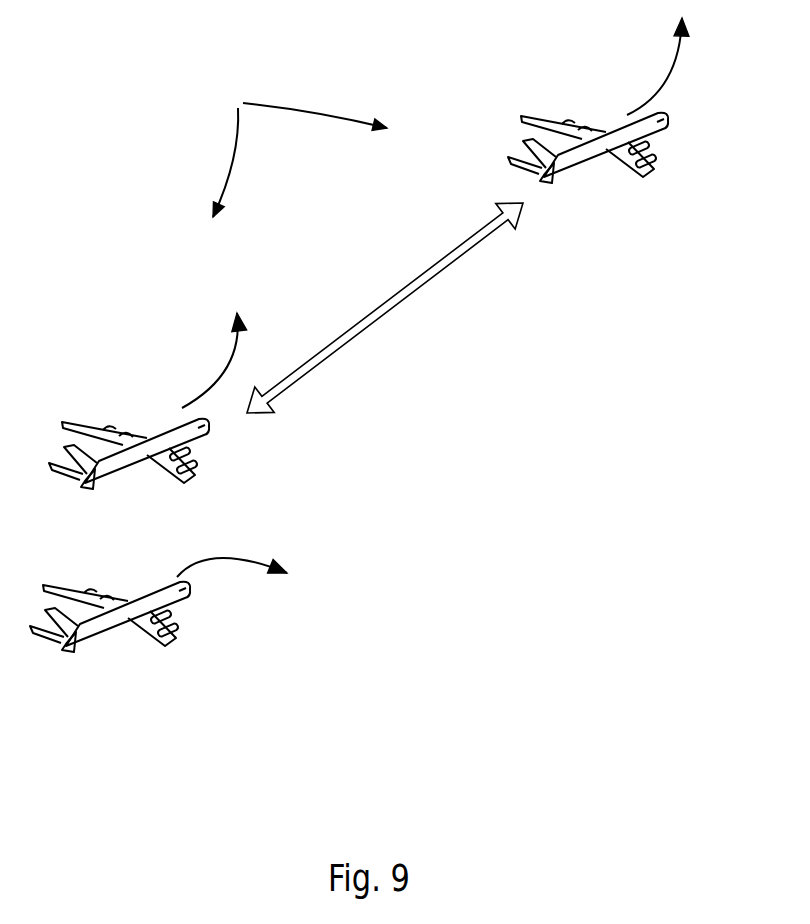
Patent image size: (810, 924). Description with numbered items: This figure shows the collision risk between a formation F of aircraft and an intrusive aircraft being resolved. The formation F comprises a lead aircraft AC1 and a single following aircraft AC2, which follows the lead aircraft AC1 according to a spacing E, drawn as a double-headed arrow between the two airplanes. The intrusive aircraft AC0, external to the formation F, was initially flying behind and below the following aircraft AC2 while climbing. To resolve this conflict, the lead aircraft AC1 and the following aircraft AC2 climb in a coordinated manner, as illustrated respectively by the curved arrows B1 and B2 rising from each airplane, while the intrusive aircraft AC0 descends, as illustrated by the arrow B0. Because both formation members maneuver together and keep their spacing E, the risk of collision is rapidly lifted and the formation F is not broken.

The intrusive aircraft AC0 is at (110, 628).
The lead aircraft AC1 is at (583, 163).
The following aircraft AC2 is at (123, 470).
The arrow B0 is at (233, 560).
The arrow B1 is at (672, 77).
The arrow B2 is at (221, 371).
The spacing E is at (407, 300).
The formation F is at (300, 147).